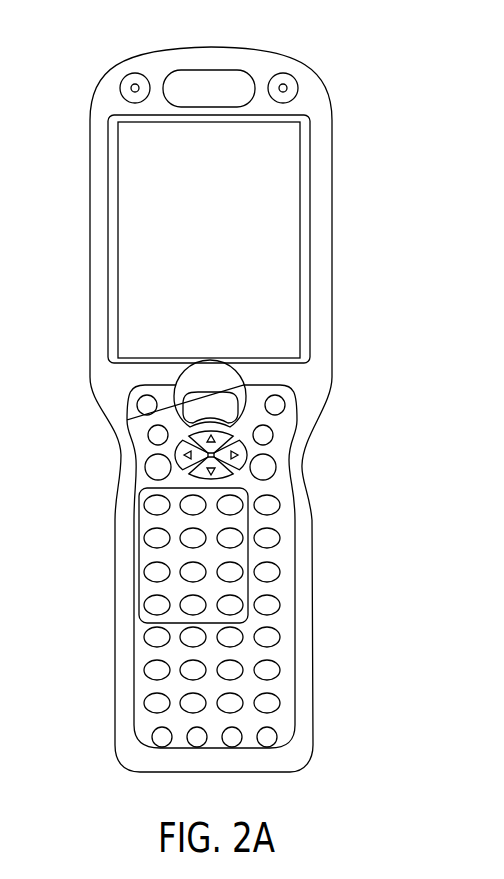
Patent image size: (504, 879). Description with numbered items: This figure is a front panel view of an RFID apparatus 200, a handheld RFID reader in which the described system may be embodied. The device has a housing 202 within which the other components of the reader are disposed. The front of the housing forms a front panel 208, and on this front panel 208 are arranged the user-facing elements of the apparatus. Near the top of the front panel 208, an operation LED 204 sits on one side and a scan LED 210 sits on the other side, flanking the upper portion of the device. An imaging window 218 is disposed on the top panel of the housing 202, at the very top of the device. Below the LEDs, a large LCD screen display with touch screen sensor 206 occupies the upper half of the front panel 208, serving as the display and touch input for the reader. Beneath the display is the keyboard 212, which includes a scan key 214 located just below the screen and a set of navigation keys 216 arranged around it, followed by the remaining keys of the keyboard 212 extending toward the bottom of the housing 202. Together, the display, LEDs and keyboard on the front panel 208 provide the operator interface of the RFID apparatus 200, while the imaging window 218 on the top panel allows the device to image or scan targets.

The RFID apparatus 200 is at (354, 46).
The housing 202 is at (332, 262).
The operation LED 204 is at (125, 80).
The LCD screen display with touch screen sensor 206 is at (128, 202).
The front panel 208 is at (90, 137).
The scan LED 210 is at (298, 90).
The keyboard 212 is at (140, 558).
The scan key 214 is at (205, 390).
The navigation keys 216 is at (178, 451).
The imaging window 218 is at (211, 47).